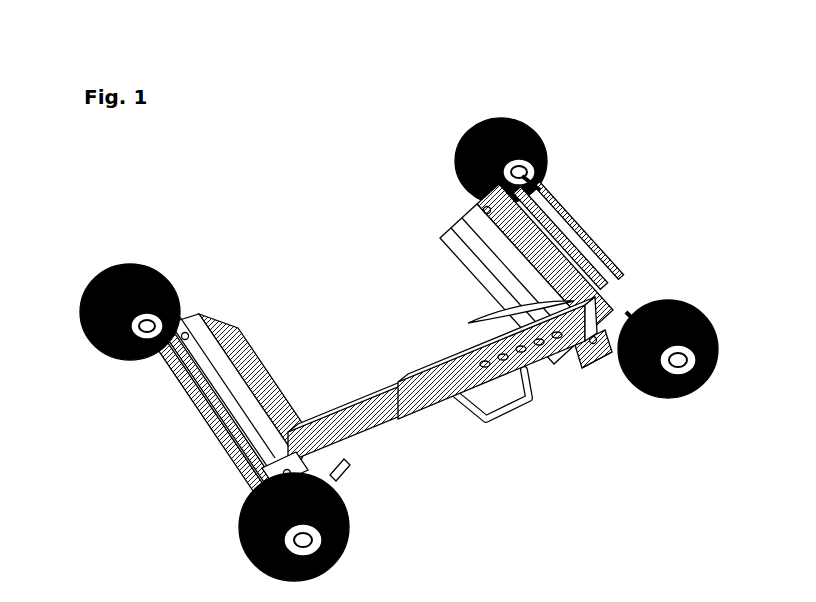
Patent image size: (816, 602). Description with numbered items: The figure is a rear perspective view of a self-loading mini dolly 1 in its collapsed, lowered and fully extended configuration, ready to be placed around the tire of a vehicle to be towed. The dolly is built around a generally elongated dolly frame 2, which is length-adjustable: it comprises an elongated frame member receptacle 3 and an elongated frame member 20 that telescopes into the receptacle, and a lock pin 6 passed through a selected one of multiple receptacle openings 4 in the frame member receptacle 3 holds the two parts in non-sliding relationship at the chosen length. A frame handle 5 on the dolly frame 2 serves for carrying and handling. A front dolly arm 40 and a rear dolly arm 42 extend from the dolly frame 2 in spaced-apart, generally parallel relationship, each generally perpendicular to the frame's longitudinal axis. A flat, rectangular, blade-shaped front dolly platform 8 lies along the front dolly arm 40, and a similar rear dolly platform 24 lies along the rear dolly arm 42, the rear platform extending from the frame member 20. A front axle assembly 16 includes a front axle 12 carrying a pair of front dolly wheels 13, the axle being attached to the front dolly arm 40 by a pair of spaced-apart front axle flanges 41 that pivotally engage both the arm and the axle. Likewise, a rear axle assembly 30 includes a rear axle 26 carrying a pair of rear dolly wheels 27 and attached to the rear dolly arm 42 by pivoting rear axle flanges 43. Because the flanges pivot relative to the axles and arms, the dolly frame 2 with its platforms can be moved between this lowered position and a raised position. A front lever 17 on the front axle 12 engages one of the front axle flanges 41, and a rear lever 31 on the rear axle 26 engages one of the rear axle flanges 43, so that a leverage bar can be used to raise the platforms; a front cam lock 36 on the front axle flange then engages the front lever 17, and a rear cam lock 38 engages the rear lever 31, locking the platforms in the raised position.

The self-loading mini dolly 1 is at (281, 147).
The dolly frame 2 is at (442, 379).
The frame member receptacle 3 is at (433, 370).
The receptacle openings 4 is at (480, 333).
The frame handle 5 is at (513, 414).
The lock pin 6 is at (480, 351).
The front dolly platform 8 is at (447, 238).
The front axle 12 is at (590, 253).
The front dolly wheels 13 is at (478, 134).
The front axle assembly 16 is at (648, 296).
The front lever 17 is at (609, 367).
The frame member 20 is at (348, 417).
The rear dolly platform 24 is at (241, 333).
The rear axle 26 is at (203, 420).
The rear dolly wheels 27 is at (106, 266).
The rear axle assembly 30 is at (238, 502).
The rear lever 31 is at (343, 467).
The front cam lock 36 is at (633, 307).
The rear cam lock 38 is at (273, 470).
The front dolly arm 40 is at (527, 243).
The front axle flanges 41 is at (536, 181).
The rear dolly arm 42 is at (200, 420).
The rear axle flanges 43 is at (147, 357).